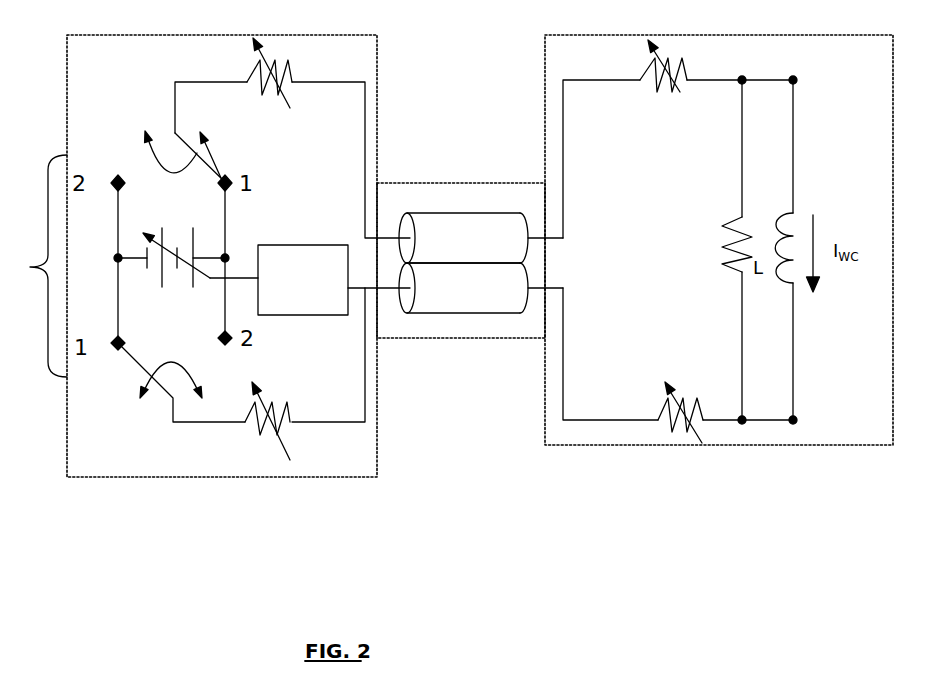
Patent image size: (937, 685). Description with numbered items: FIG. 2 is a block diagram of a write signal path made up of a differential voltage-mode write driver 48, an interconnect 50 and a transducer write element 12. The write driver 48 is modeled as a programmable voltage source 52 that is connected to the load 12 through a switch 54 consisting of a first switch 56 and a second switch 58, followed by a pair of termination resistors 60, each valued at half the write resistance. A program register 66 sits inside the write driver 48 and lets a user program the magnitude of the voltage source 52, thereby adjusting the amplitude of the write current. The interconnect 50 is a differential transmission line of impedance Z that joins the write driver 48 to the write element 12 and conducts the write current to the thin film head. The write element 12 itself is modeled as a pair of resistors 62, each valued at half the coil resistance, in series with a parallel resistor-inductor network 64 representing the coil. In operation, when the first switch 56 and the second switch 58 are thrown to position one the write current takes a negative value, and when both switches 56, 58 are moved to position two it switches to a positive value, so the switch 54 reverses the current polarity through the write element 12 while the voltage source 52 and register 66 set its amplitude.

The write element 12 is at (543, 140).
The differential voltage-mode write driver 48 is at (377, 138).
The interconnect 50 is at (493, 183).
The programmable voltage source 52 is at (183, 242).
The switch 54 is at (40, 266).
The switch SW1 56 is at (142, 170).
The switch SW2 58 is at (137, 373).
The termination resistors 60 is at (318, 65).
The pair of resistors 62 is at (623, 63).
The parallel resistor inductor R-L network 64 is at (718, 208).
The program register 66 is at (273, 240).